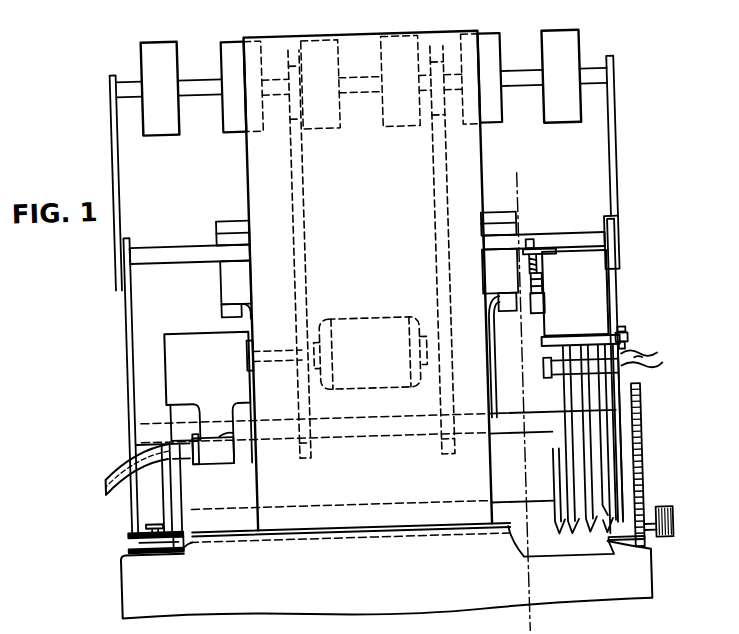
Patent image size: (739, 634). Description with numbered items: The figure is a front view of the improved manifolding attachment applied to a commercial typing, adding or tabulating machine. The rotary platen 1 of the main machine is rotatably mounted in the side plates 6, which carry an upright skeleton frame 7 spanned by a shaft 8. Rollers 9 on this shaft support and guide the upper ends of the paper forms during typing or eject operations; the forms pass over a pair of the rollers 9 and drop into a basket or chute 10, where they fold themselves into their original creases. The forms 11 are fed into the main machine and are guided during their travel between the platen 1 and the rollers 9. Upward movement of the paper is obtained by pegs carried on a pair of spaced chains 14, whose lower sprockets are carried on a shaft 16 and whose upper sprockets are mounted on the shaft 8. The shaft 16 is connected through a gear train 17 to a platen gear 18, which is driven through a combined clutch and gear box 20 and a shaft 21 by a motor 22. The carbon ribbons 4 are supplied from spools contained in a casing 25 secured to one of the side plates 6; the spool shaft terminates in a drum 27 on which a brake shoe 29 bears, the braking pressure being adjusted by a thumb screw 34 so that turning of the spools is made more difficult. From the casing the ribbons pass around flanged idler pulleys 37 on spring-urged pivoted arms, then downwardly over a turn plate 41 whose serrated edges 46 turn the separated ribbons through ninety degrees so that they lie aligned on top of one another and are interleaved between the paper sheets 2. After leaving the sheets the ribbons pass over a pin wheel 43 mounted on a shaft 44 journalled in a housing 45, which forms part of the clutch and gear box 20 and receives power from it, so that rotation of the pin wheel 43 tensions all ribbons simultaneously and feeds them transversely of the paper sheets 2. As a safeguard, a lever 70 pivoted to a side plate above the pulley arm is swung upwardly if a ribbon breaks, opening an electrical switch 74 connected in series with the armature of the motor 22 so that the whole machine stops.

The rotary platen 1 is at (587, 547).
The paper sheets 2 is at (482, 479).
The ribbons 4 is at (232, 508).
The side plates 6 is at (124, 328).
The upright skeleton frame 7 is at (124, 156).
The shaft 8 is at (520, 74).
The rollers 9 is at (178, 52).
The basket or chute 10 is at (231, 217).
The forms 11 is at (117, 573).
The chains 14 is at (301, 279).
The shaft 16 is at (503, 416).
The gear train 17 is at (643, 461).
The platen gear 18 is at (633, 545).
The combined clutch and gear box 20 is at (180, 329).
The shaft 21 is at (273, 345).
The motor 22 is at (373, 328).
The casing 25 is at (579, 298).
The drum 27 is at (538, 310).
The brake shoe 29 is at (541, 290).
The thumb screw 34 is at (540, 247).
The idler pulleys 37 is at (547, 370).
The turn plate 41 is at (546, 490).
The pin wheel 43 is at (165, 434).
The shaft 44 is at (175, 461).
The housing 45 is at (218, 453).
The serrated edges 46 is at (556, 540).
The lever 70 is at (626, 341).
The electrical switch 74 is at (621, 375).